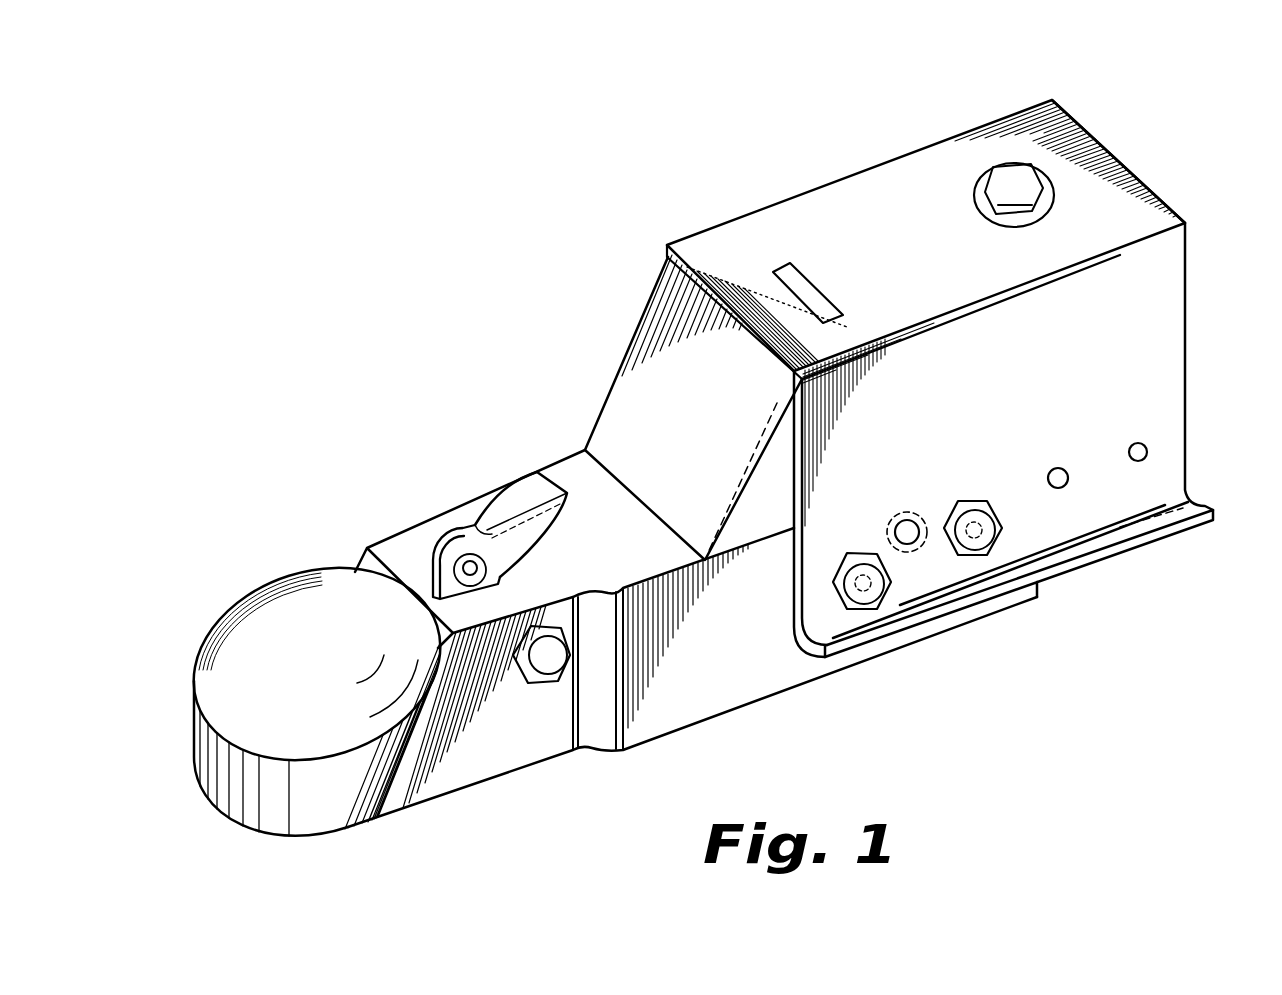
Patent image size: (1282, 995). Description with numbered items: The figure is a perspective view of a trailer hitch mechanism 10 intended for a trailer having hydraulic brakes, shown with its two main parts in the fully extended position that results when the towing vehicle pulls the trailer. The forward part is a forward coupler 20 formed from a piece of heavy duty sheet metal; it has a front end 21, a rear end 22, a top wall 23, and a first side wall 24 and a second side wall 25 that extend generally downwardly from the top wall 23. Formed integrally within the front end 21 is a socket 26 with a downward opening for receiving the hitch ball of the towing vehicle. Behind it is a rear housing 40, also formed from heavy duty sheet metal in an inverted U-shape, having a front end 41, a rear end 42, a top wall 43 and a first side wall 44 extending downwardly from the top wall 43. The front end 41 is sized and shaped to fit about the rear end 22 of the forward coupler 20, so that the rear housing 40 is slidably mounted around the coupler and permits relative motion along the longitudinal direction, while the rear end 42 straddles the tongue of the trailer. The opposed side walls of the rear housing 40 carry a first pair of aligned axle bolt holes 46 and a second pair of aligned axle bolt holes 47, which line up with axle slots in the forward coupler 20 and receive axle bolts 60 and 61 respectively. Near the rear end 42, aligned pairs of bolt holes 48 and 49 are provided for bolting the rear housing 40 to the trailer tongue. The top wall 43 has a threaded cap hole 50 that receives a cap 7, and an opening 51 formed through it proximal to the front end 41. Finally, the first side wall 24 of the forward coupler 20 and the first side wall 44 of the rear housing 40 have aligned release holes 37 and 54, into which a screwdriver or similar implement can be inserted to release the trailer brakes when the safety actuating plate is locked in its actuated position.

The cap 7 is at (1013, 182).
The trailer hitch mechanism 10 is at (327, 232).
The forward coupler 20 is at (367, 548).
The front end 21 is at (193, 705).
The rear end 22 is at (1040, 590).
The top wall 23 is at (577, 462).
The first side wall 24 is at (675, 695).
The second side wall 25 is at (397, 528).
The socket 26 is at (257, 610).
The release hole 37 is at (900, 520).
The rear housing 40 is at (827, 240).
The front end 41 is at (668, 272).
The rear end 42 is at (1125, 162).
The top wall 43 is at (860, 192).
The first side wall 44 is at (1153, 345).
The first pair of aligned axle bolt holes 46 is at (857, 609).
The second pair of aligned axle bolt holes 47 is at (975, 504).
The bolt holes 48 is at (1066, 486).
The bolt holes 49 is at (1147, 452).
The threaded cap hole 50 is at (974, 185).
The opening 51 is at (773, 268).
The release hole 54 is at (908, 548).
The axle bolt 60 is at (876, 604).
The axle bolt 61 is at (982, 553).